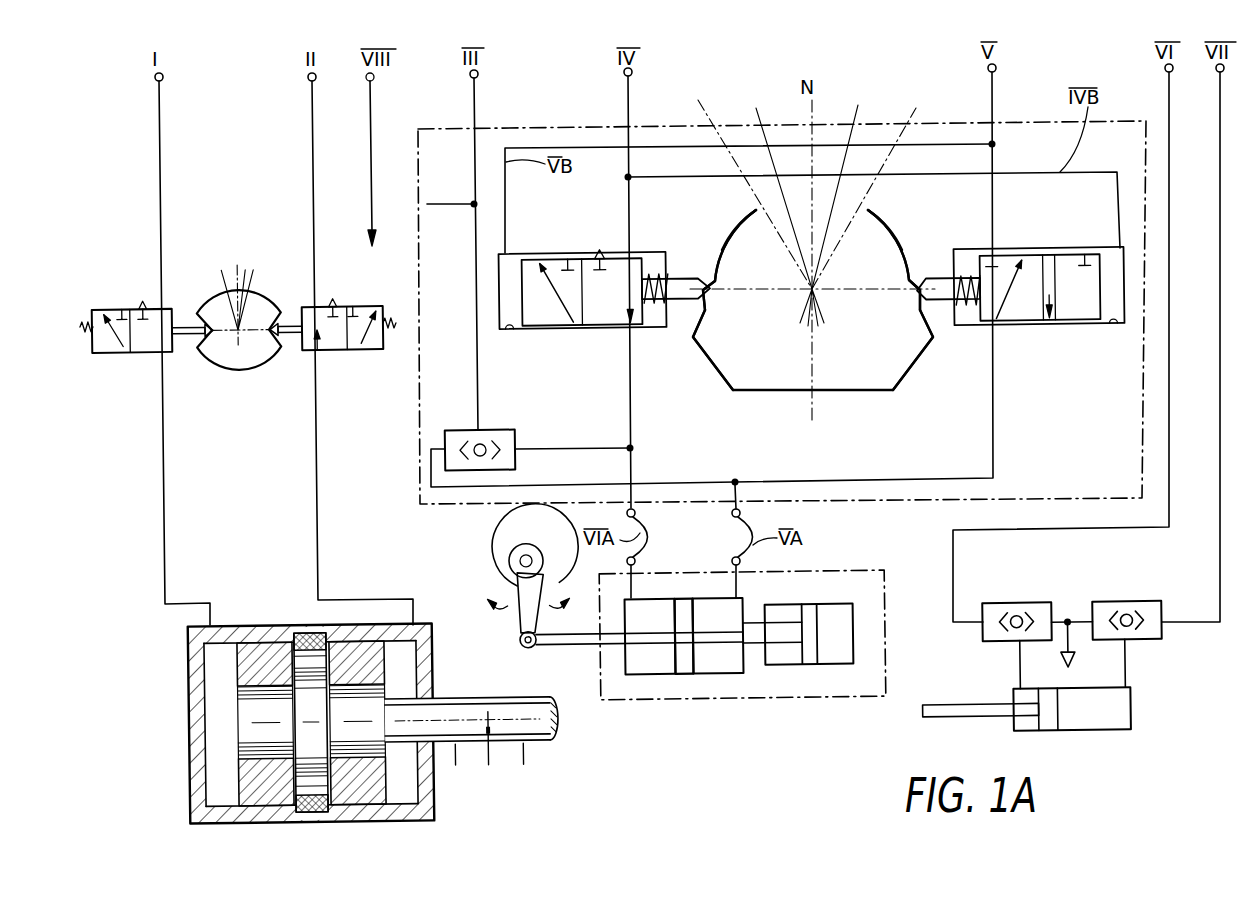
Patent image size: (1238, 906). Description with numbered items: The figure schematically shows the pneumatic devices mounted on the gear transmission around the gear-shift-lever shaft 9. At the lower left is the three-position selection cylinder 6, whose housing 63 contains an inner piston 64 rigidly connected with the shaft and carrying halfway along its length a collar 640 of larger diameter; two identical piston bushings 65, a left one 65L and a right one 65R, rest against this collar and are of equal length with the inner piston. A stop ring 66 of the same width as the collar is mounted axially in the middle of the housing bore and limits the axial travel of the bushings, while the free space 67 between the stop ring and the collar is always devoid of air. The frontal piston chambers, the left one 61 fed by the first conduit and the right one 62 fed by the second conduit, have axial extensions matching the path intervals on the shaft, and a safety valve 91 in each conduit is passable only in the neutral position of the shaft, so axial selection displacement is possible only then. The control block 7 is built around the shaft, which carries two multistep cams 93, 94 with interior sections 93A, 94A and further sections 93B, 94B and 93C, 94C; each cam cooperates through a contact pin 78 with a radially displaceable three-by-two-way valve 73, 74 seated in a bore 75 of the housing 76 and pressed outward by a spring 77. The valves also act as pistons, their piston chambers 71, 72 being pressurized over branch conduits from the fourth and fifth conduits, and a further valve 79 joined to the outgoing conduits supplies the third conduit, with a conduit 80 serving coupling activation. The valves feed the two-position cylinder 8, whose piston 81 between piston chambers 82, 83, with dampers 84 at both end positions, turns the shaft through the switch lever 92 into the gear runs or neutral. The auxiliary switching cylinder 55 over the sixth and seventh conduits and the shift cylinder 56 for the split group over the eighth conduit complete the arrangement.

The three-position selection cylinder 6 is at (339, 686).
The control block 7 is at (417, 478).
The two-position cylinder 8 is at (711, 639).
The gear-shift-lever shaft 9 is at (577, 433).
The auxiliary switching cylinder 55 is at (1118, 707).
The shift cylinder for the split transmission 56 is at (368, 178).
The left piston chamber 61 is at (213, 716).
The right-hand piston chamber 62 is at (402, 790).
The housing 63 is at (188, 693).
The inner piston 64 is at (375, 704).
The piston bushings 65 is at (247, 768).
The left piston bushing 65L is at (232, 661).
The right piston bushing 65R is at (373, 655).
The stop ring 66 is at (311, 631).
The free space 67 is at (264, 810).
The piston chamber 71 is at (502, 298).
The piston chamber 72 is at (1112, 258).
The 3/2-way valve 73 is at (598, 316).
The 3/2-way valve 74 is at (1023, 314).
The bore 75 is at (510, 329).
The housing 76 is at (545, 258).
The spring 77 is at (658, 302).
The contact pins 78 is at (682, 290).
The two-way valve 79 is at (505, 433).
The conduit 80 is at (456, 207).
The piston 81 is at (685, 598).
The piston chamber 82 is at (658, 664).
The piston chamber 83 is at (724, 664).
The dampers 84 is at (833, 652).
The safety valve 91 is at (104, 352).
The switch lever 92 is at (518, 627).
The multistep cam 93 is at (722, 243).
The interior cam section 93A is at (738, 223).
The cam section 93B is at (712, 302).
The cam section 93C is at (718, 376).
The multistep cam 94 is at (901, 243).
The interior cam section 94A is at (877, 223).
The cam section 94B is at (918, 310).
The cam section 94C is at (917, 362).
The collar 640 is at (353, 650).